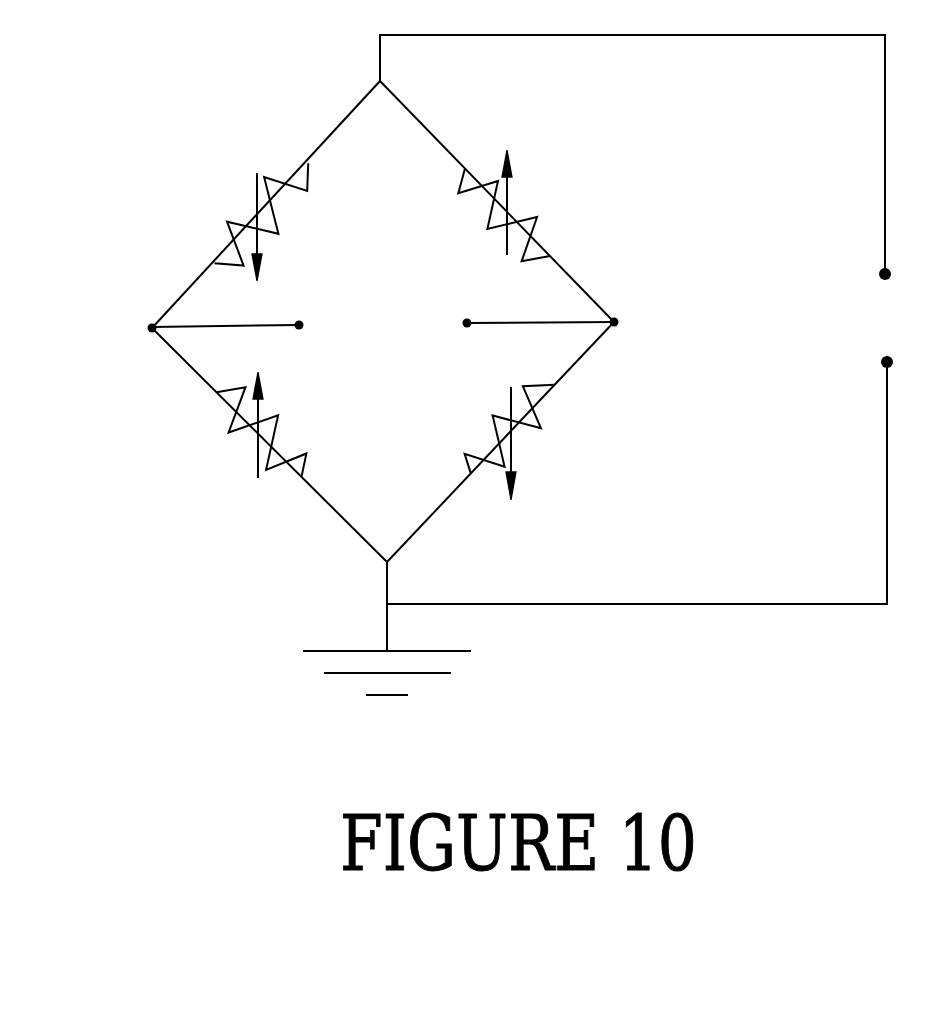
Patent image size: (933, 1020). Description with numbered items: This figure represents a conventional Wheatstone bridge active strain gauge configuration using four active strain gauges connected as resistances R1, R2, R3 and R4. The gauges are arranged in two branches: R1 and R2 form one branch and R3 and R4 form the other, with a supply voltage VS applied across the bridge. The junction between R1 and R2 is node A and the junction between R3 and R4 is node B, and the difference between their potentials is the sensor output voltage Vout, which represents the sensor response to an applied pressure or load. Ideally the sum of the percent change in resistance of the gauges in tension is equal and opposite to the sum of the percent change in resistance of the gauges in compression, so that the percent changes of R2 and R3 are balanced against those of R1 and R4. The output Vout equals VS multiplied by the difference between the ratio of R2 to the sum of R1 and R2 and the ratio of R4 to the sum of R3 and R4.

The first active strain gauge resistance R1 is at (252, 204).
The second active strain gauge resistance R2 is at (247, 444).
The third active strain gauge resistance R3 is at (514, 193).
The fourth active strain gauge resistance R4 is at (520, 449).
The bridge node A is at (130, 324).
The bridge node B is at (639, 322).
The sensor output voltage Vout is at (383, 324).
The supply voltage VS is at (887, 318).